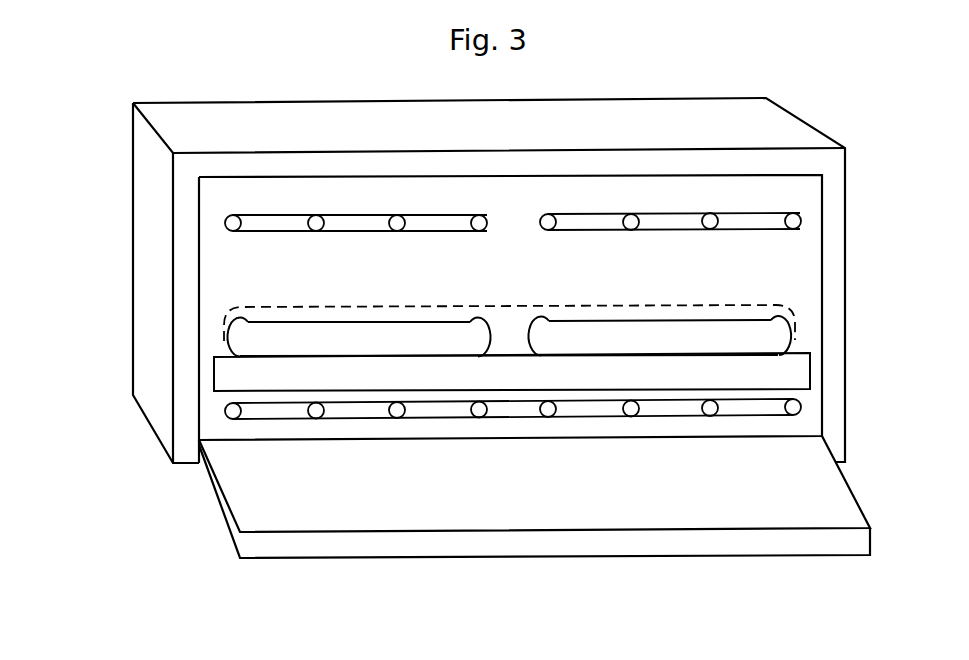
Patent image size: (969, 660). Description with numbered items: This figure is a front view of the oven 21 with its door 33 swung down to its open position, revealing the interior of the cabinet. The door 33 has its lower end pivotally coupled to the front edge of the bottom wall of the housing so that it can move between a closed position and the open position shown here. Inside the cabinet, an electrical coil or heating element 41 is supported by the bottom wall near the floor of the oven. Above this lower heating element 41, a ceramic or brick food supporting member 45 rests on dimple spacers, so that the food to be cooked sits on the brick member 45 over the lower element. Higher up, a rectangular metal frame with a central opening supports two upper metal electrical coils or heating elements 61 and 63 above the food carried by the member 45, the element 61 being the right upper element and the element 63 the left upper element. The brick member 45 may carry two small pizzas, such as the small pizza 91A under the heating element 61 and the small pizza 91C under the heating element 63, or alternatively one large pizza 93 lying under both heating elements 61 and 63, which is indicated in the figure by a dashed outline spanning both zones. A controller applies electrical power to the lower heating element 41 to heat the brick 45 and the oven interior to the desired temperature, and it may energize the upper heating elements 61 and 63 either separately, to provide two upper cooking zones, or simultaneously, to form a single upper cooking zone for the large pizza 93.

The oven 21 is at (420, 133).
The front door 33 is at (702, 516).
The heating element 41 is at (799, 413).
The food supporting member 45 is at (221, 375).
The heating element 61 is at (682, 213).
The heating element 63 is at (224, 222).
The small pizza 91A is at (778, 333).
The small pizza 91C is at (232, 338).
The large pizza 93 is at (692, 298).